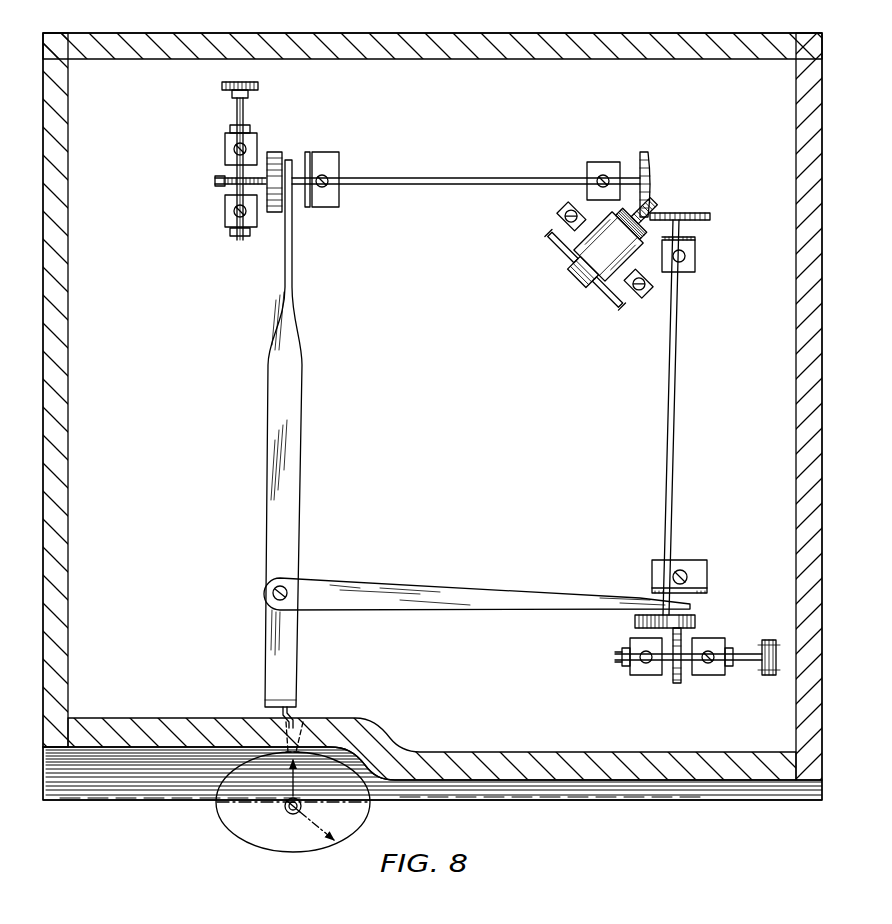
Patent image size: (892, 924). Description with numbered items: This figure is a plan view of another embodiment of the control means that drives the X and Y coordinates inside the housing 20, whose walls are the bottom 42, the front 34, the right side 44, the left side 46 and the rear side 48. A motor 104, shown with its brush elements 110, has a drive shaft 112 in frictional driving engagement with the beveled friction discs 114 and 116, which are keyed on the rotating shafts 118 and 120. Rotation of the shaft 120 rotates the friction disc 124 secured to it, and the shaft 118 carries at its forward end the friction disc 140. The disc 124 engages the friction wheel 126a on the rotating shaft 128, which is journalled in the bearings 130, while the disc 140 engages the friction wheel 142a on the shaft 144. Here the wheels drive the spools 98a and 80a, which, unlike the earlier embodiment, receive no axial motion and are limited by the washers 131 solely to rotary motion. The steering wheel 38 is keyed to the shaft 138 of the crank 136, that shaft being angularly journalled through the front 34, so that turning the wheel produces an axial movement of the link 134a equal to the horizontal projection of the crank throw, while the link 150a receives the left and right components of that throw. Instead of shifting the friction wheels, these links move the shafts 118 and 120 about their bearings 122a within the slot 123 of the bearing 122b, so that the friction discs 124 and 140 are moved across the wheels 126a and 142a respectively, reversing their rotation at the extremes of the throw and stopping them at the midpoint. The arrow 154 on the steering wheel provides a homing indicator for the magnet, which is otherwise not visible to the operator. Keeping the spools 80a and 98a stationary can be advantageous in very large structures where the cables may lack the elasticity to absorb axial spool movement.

The housing 20 is at (704, 806).
The front 34 is at (572, 780).
The steering wheel 38 is at (345, 818).
The bottom 42 is at (438, 432).
The right side 44 is at (797, 352).
The left side 46 is at (70, 348).
The rear side 48 is at (486, 52).
The spool 80a is at (785, 628).
The spool 98a is at (258, 84).
The motor 104 is at (568, 263).
The motor brush 110 is at (552, 238).
The drive shaft 112 is at (650, 213).
The beveled friction disc 114 is at (706, 213).
The beveled friction disc 116 is at (649, 175).
The rotating shaft 118 is at (677, 455).
The rotating shaft 120 is at (465, 177).
The bearing 122a is at (607, 162).
The bearing 122b is at (336, 162).
The slot 123 is at (322, 163).
The friction disc 124 is at (273, 212).
The friction wheel 126a is at (216, 180).
The rotating shaft 128 is at (239, 105).
The bearing 130 is at (257, 143).
The washer 131 is at (232, 127).
The link 134a is at (294, 448).
The crank 136 is at (282, 703).
The shaft 138 is at (302, 728).
The friction disc 140 is at (692, 620).
The friction wheel 142a is at (683, 684).
The shaft 144 is at (618, 656).
The link 150a is at (486, 592).
The arrow 154 is at (288, 794).